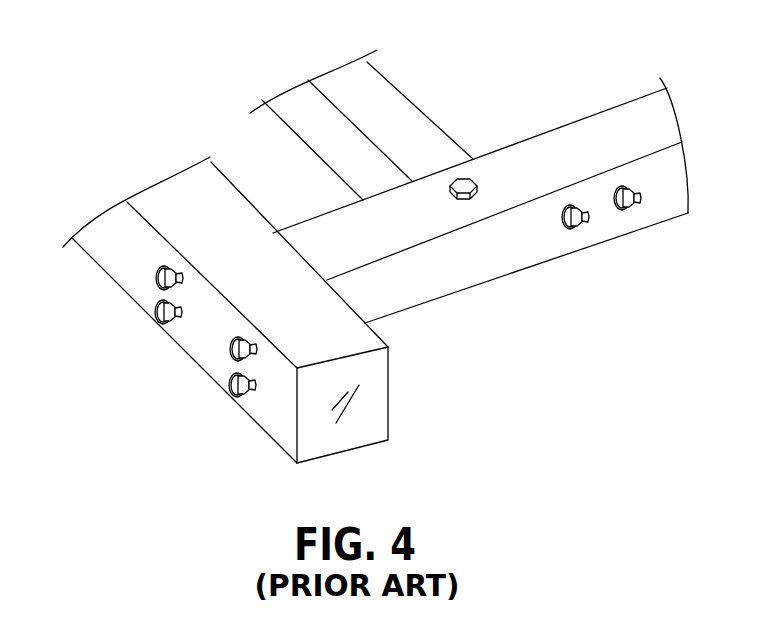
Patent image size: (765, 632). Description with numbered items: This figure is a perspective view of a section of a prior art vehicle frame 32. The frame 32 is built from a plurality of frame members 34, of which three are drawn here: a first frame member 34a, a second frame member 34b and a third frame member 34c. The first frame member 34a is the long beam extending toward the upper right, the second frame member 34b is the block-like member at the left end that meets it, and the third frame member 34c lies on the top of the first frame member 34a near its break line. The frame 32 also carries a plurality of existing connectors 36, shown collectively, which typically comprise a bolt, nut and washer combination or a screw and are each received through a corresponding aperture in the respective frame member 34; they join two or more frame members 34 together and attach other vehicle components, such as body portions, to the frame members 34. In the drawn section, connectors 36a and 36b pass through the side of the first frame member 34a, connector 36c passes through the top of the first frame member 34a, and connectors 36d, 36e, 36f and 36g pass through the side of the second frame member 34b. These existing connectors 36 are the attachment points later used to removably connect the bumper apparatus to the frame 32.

The frame 32 is at (358, 235).
The frame members 34 is at (469, 191).
The first frame member 34a is at (407, 293).
The second frame member 34b is at (108, 243).
The third frame member 34c is at (383, 98).
The connectors 36 is at (398, 282).
The connector 36a is at (589, 222).
The connector 36b is at (640, 204).
The connector 36c is at (468, 182).
The connector 36d is at (232, 360).
The connector 36e is at (232, 395).
The connector 36f is at (157, 286).
The connector 36g is at (158, 322).